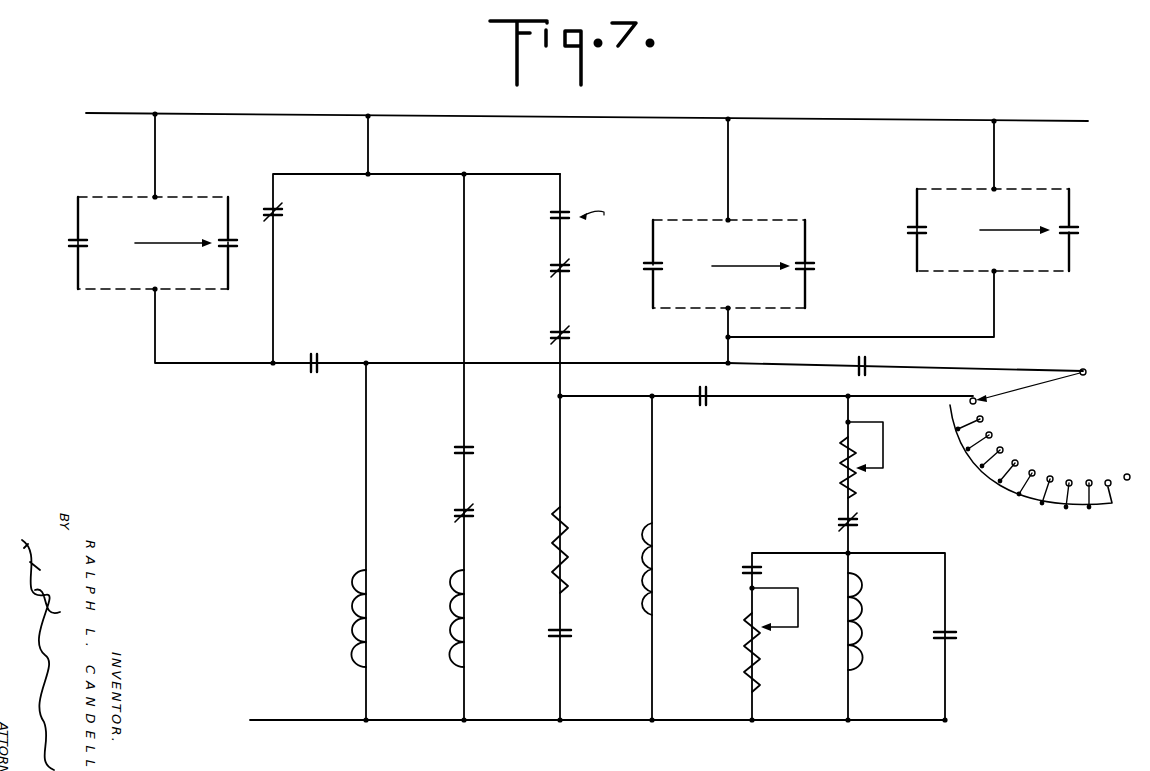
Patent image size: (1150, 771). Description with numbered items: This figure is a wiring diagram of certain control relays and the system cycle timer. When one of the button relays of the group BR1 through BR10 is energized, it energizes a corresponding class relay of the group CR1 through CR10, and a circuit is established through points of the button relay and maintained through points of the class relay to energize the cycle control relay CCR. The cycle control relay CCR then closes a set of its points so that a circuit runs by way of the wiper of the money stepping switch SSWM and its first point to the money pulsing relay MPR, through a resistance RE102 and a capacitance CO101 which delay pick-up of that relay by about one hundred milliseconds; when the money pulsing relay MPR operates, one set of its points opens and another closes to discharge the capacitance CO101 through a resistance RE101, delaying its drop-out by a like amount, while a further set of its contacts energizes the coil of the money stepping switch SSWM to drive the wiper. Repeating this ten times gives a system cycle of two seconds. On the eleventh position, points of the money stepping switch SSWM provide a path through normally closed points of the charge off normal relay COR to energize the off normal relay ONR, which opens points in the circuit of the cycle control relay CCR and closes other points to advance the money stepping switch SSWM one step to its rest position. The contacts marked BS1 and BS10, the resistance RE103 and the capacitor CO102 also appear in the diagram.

The bank selector relay BS1 contacts BS1 is at (148, 243).
The bank selector relay BS10 contacts BS10 is at (241, 243).
The off normal relay ONR is at (456, 431).
The cycle control relay CCR is at (590, 458).
The money stepping switch SSWM is at (793, 465).
The button relay BR1 is at (720, 264).
The button relay BR10 is at (818, 264).
The class relay CR1 is at (983, 230).
The class relay CR10 is at (1083, 230).
The money pulsing relay MPR is at (785, 522).
The charge off normal relay COR is at (474, 513).
The resistor RE103 220 ohm RE103 is at (583, 550).
The capacitor CO102 is at (585, 635).
The resistance RE102 is at (838, 460).
The resistance RE101 is at (779, 640).
The capacitance CO101 is at (959, 636).